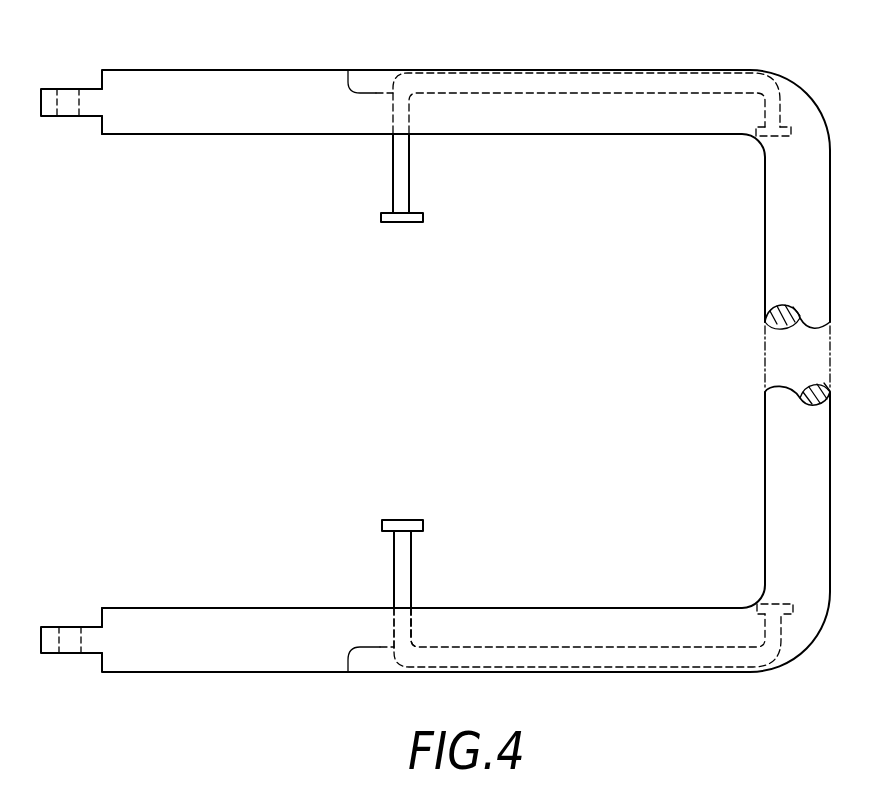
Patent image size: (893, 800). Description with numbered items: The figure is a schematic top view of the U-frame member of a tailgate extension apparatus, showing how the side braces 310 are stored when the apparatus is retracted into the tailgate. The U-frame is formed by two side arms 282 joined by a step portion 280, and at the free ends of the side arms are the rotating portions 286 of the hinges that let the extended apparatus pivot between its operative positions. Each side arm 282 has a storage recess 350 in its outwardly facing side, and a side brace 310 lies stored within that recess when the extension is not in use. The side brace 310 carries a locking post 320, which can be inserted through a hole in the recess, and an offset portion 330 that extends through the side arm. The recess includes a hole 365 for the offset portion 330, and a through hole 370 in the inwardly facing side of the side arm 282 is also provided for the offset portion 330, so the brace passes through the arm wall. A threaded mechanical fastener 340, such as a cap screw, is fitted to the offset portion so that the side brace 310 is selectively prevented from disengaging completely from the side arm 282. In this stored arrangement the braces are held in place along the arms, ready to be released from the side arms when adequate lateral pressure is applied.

The step portion 280 is at (766, 212).
The side arm 282 is at (621, 134).
The rotating portion of hinge 286 is at (92, 627).
The side brace 310 is at (556, 80).
The locking post 320 is at (768, 630).
The offset portion 330 is at (393, 174).
The threaded mechanical fastener 340 is at (399, 520).
The storage recess 350 is at (383, 650).
The hole for offset portion 365 is at (406, 635).
The through hole 370 is at (402, 608).